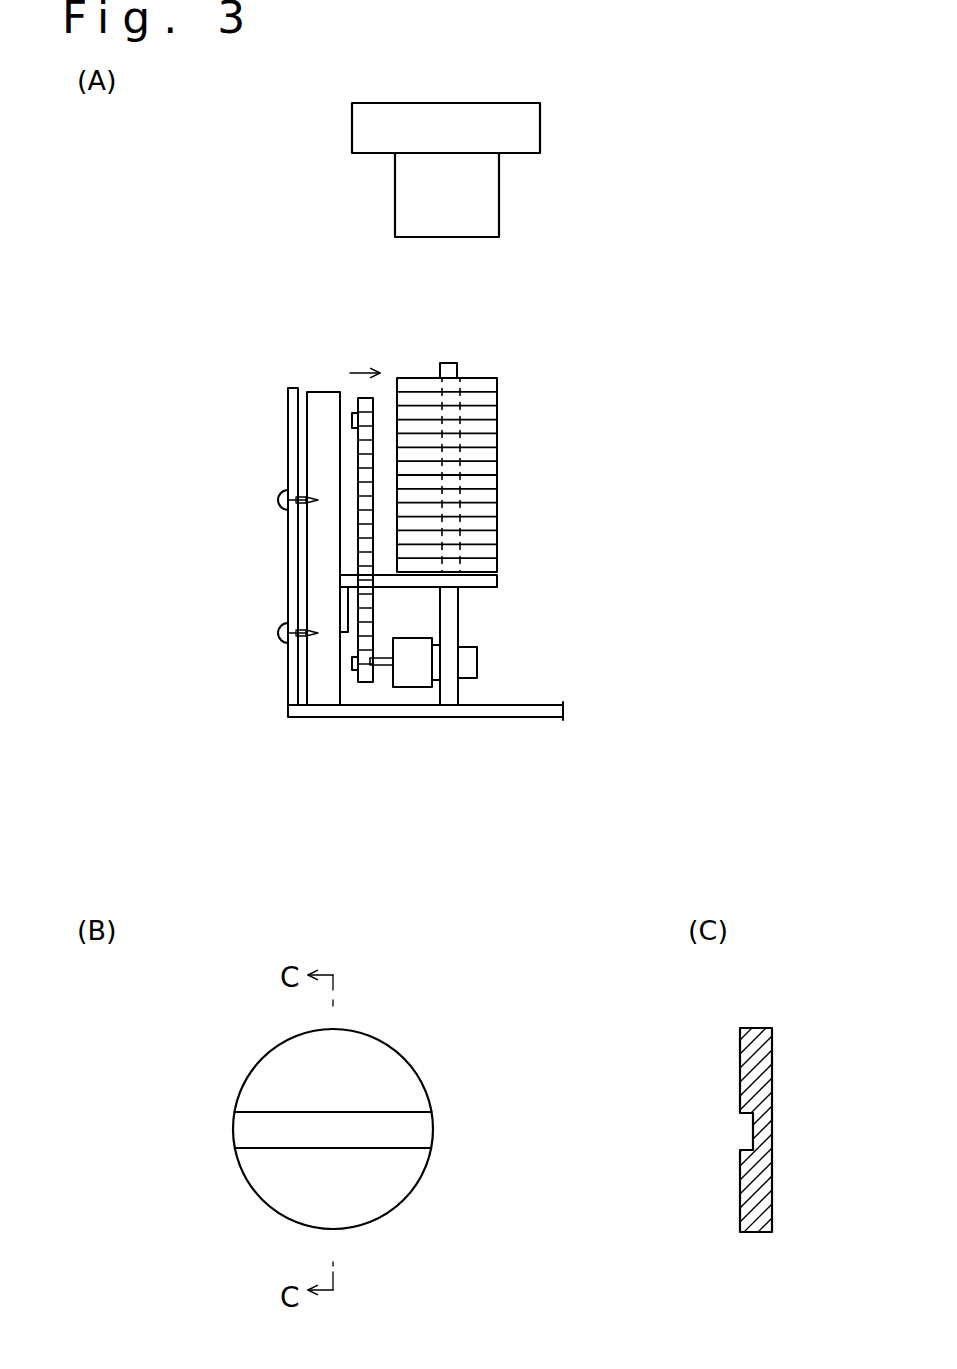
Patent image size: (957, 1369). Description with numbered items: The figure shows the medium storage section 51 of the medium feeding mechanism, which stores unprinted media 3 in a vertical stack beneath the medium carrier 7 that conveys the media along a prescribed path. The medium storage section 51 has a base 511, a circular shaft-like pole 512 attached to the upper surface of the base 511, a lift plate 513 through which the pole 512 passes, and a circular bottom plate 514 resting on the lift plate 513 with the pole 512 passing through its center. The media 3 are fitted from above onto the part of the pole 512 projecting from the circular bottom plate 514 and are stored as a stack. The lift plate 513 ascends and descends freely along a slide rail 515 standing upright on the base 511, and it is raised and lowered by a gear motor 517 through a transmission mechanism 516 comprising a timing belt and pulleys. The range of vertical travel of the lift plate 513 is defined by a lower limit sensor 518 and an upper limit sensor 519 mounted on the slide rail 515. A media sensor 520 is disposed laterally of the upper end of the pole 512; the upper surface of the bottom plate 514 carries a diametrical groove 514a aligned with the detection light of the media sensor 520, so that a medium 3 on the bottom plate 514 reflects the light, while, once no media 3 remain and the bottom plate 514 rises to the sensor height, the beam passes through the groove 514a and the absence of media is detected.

The medium carrier 7 is at (490, 180).
The medium storage section 51 is at (270, 335).
The base 511 is at (552, 720).
The pole 512 is at (460, 622).
The lift plate 513 is at (497, 583).
The circular bottom plate 514 is at (497, 572).
The diametrical groove 514a is at (423, 1132).
The slide rail 515 is at (322, 413).
The transmission mechanism 516 is at (353, 692).
The gear motor 517 is at (413, 678).
The lower limit sensor 518 is at (325, 670).
The upper limit sensor 519 is at (322, 440).
The media sensor 520 is at (518, 372).
The media 3 is at (508, 402).